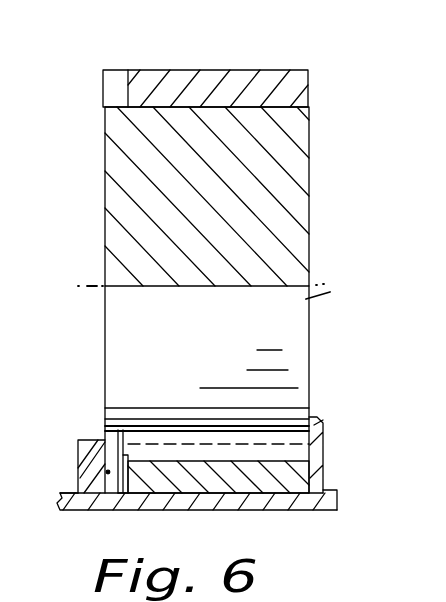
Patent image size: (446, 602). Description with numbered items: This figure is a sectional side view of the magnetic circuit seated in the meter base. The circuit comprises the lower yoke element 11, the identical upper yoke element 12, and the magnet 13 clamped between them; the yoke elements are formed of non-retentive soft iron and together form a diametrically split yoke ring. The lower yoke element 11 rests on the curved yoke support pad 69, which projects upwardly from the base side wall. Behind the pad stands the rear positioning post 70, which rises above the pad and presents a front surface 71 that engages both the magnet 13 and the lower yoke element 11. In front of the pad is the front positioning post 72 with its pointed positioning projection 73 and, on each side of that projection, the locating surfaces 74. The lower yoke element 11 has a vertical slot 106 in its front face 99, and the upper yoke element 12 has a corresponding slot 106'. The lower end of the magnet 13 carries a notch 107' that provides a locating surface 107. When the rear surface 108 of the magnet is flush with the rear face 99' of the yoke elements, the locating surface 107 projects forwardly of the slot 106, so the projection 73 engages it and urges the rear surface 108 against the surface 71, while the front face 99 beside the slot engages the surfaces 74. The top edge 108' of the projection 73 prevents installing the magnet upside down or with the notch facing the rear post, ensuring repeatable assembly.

The lower yoke element 11 is at (198, 512).
The upper yoke element 12 is at (232, 80).
The magnet 13 is at (220, 293).
The yoke support pad 69 is at (283, 500).
The rear positioning post 70 is at (315, 449).
The front surface 71 is at (320, 489).
The front positioning post 72 is at (86, 440).
The positioning projection 73 is at (92, 498).
The locating surfaces 74 is at (106, 472).
The front face 99 is at (179, 300).
The rear face 99' is at (236, 88).
The vertical slot 106 is at (137, 515).
The vertical slot 106' is at (121, 64).
The locating surface 107 is at (165, 434).
The notch 107' is at (139, 409).
The rear surface 108 is at (244, 390).
The top edge 108' is at (163, 418).